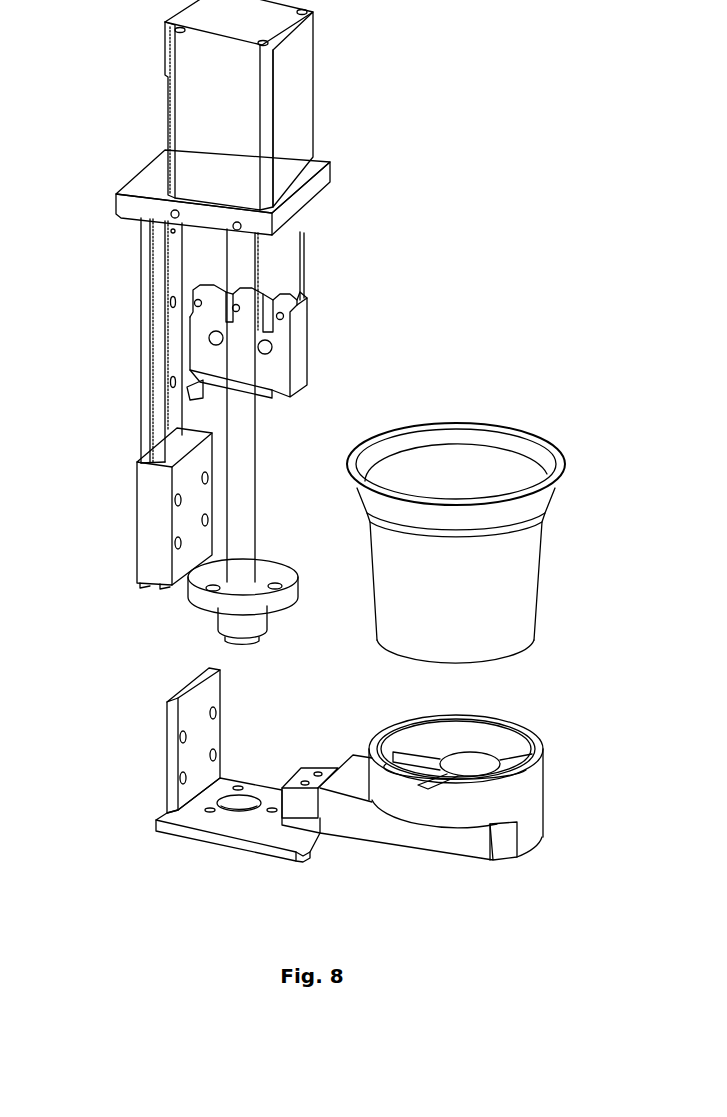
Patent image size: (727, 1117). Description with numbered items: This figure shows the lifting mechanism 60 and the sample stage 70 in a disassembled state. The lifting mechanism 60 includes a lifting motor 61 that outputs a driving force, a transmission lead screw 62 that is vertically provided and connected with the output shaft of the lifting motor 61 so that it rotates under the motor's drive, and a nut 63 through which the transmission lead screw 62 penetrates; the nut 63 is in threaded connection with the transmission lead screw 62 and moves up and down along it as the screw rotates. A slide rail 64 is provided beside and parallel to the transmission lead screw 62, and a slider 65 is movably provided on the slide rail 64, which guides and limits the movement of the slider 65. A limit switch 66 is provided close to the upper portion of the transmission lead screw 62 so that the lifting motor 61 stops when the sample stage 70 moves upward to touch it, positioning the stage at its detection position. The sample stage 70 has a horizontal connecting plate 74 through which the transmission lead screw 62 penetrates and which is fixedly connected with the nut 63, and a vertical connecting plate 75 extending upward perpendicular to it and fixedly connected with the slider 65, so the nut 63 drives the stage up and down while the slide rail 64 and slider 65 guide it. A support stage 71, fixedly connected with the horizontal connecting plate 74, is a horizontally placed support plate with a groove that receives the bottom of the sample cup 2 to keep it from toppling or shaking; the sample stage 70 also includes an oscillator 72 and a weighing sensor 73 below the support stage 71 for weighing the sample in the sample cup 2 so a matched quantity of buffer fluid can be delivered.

The sample cup 2 is at (508, 580).
The lifting mechanism 60 is at (88, 204).
The lifting motor 61 is at (300, 108).
The transmission lead screw 62 is at (243, 461).
The nut 63 is at (200, 600).
The slide rail 64 is at (153, 338).
The slider 65 is at (148, 523).
The limit switch 66 is at (300, 352).
The sample stage 70 is at (341, 870).
The support stage 71 is at (452, 848).
The oscillator 72 is at (470, 757).
The weighing sensor 73 is at (300, 778).
The horizontal connecting plate 74 is at (222, 823).
The vertical connecting plate 75 is at (188, 757).